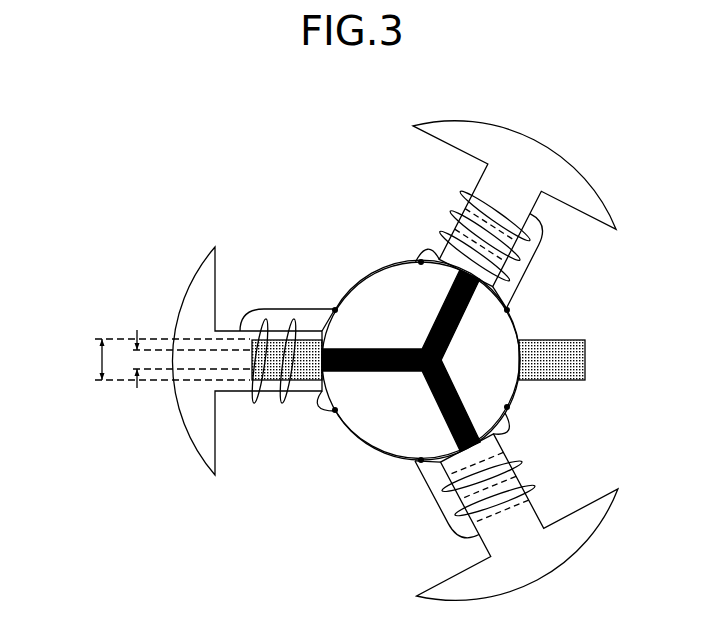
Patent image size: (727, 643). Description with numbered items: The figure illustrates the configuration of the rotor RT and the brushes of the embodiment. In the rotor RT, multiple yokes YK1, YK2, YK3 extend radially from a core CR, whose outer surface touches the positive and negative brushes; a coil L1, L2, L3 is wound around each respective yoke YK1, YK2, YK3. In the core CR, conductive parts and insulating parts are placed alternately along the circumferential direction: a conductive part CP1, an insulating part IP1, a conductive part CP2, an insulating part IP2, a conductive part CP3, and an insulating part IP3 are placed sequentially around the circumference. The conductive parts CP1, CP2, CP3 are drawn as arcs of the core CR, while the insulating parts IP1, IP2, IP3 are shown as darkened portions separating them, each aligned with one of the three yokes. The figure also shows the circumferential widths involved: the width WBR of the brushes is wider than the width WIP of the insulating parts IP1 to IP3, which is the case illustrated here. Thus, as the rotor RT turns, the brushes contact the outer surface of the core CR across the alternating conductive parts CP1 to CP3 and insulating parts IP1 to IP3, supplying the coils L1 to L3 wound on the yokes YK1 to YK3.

The rotor RT is at (236, 167).
The core CR is at (343, 458).
The insulating part IP1 is at (343, 340).
The insulating part IP2 is at (447, 430).
The insulating part IP3 is at (473, 298).
The conductive part CP1 is at (382, 287).
The conductive part CP2 is at (396, 462).
The conductive part CP3 is at (503, 391).
The yoke YK1 is at (553, 160).
The yoke YK2 is at (552, 562).
The yoke YK3 is at (192, 284).
The coil L1 is at (435, 208).
The coil L2 is at (552, 464).
The coil L3 is at (258, 418).
The width of the insulating parts WIP is at (137, 350).
The width of the brushes WBR is at (102, 358).